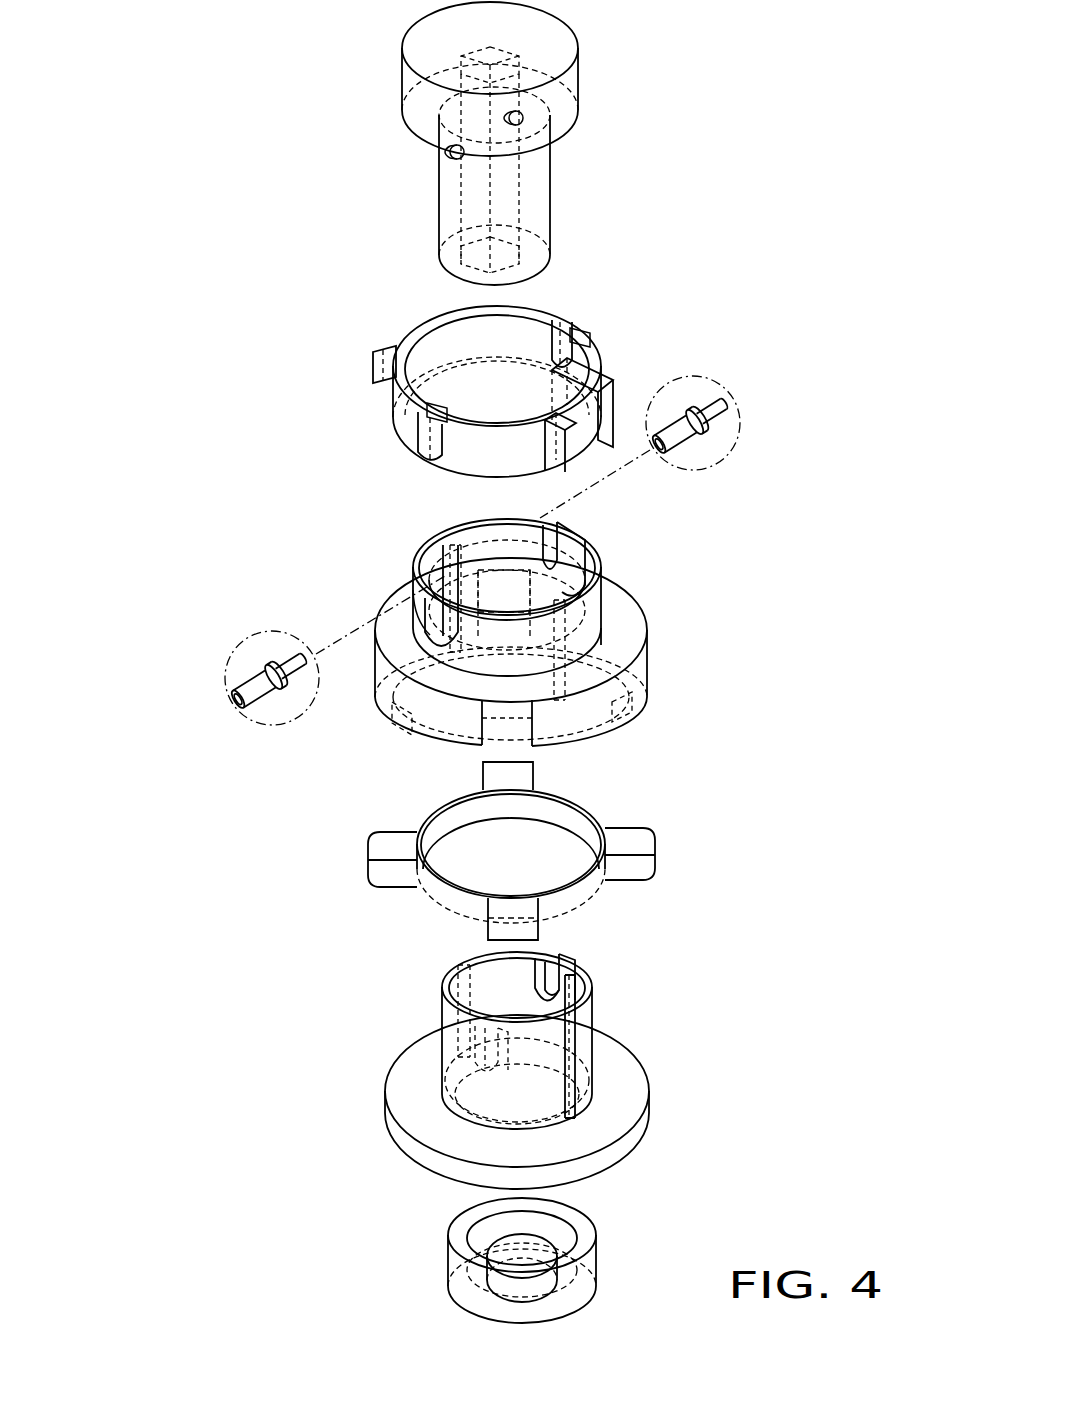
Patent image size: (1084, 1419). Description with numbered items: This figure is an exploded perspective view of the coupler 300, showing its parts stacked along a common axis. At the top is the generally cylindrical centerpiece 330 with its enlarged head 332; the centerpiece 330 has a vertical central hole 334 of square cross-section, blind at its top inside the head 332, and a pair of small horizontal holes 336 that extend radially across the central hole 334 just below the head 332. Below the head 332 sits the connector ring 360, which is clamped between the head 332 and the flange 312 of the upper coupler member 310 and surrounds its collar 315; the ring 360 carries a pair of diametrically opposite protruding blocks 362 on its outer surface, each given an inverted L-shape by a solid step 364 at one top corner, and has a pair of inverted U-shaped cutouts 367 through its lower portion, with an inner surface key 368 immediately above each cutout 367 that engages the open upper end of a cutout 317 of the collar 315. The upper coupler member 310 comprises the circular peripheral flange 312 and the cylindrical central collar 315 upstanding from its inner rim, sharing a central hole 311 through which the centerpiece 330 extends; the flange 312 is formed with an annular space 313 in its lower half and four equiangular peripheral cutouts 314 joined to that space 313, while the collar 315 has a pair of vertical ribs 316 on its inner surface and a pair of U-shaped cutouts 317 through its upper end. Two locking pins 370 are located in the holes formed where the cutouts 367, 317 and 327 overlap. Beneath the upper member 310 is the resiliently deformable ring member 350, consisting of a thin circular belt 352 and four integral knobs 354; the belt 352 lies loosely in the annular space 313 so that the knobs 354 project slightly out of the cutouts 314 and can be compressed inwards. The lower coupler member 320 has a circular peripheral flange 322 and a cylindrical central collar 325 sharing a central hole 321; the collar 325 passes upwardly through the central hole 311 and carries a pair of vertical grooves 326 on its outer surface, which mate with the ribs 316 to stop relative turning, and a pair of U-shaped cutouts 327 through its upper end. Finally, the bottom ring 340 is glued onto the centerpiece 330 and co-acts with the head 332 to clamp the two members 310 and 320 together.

The coupler 300 is at (222, 203).
The centerpiece 330 is at (705, 162).
The head 332 is at (410, 42).
The central hole 334 is at (458, 202).
The horizontal holes 336 is at (470, 158).
The connector ring 360 is at (688, 300).
The protruding blocks 362 is at (400, 325).
The solid step 364 is at (385, 368).
The inverted U-shaped cutouts 367 is at (582, 360).
The inner surface key 368 is at (560, 333).
The locking pins 370 is at (738, 462).
The upper coupler member 310 is at (712, 604).
The central hole 311 is at (498, 558).
The peripheral flange 312 is at (620, 592).
The annular space 313 is at (600, 702).
The peripheral cutouts 314 is at (640, 668).
The central collar 315 is at (412, 568).
The vertical ribs 316 is at (452, 550).
The U-shaped cutouts 317 is at (577, 545).
The ring member 350 is at (745, 806).
The belt 352 is at (435, 812).
The knobs 354 is at (530, 775).
The lower coupler member 320 is at (742, 1005).
The central hole 321 is at (495, 965).
The peripheral flange 322 is at (400, 1082).
The central collar 325 is at (592, 1013).
The vertical grooves 326 is at (453, 970).
The U-shaped cutouts 327 is at (570, 968).
The bottom ring 340 is at (398, 1243).